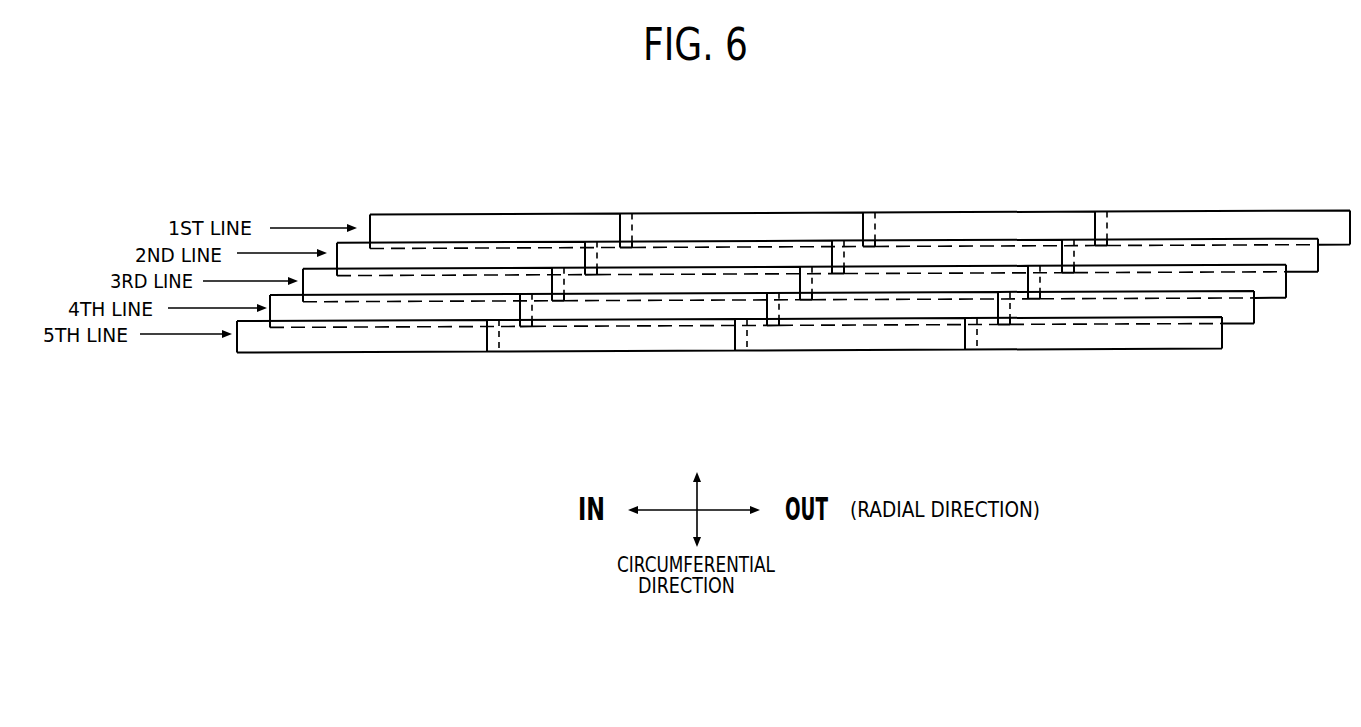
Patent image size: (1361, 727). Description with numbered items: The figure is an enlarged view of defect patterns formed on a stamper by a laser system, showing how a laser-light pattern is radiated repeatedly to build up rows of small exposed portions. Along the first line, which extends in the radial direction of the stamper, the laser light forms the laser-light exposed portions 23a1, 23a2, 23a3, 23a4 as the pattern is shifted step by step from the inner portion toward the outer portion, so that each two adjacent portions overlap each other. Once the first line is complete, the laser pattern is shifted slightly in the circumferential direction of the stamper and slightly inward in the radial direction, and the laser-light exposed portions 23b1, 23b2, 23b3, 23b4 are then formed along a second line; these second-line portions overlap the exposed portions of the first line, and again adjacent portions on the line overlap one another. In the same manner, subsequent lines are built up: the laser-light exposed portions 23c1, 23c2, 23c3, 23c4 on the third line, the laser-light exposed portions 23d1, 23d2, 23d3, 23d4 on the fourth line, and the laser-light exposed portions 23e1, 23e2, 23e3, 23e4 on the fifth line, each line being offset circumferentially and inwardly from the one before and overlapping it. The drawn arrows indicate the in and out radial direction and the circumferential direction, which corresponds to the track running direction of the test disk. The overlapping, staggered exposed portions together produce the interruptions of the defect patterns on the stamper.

The laser-light exposed portion 23a1 is at (553, 227).
The laser-light exposed portion 23a2 is at (782, 252).
The laser-light exposed portion 23a3 is at (1015, 227).
The laser-light exposed portion 23a4 is at (1250, 222).
The laser-light exposed portion 23b1 is at (492, 262).
The laser-light exposed portion 23b2 is at (720, 258).
The laser-light exposed portion 23b3 is at (948, 258).
The laser-light exposed portion 23b4 is at (1183, 250).
The laser-light exposed portion 23c1 is at (418, 278).
The laser-light exposed portion 23c2 is at (668, 280).
The laser-light exposed portion 23c3 is at (888, 280).
The laser-light exposed portion 23c4 is at (1128, 280).
The laser-light exposed portion 23d1 is at (418, 322).
The laser-light exposed portion 23d2 is at (683, 320).
The laser-light exposed portion 23d3 is at (935, 320).
The laser-light exposed portion 23d4 is at (1175, 307).
The laser-light exposed portion 23e1 is at (325, 343).
The laser-light exposed portion 23e2 is at (598, 342).
The laser-light exposed portion 23e3 is at (852, 342).
The laser-light exposed portion 23e4 is at (1085, 342).